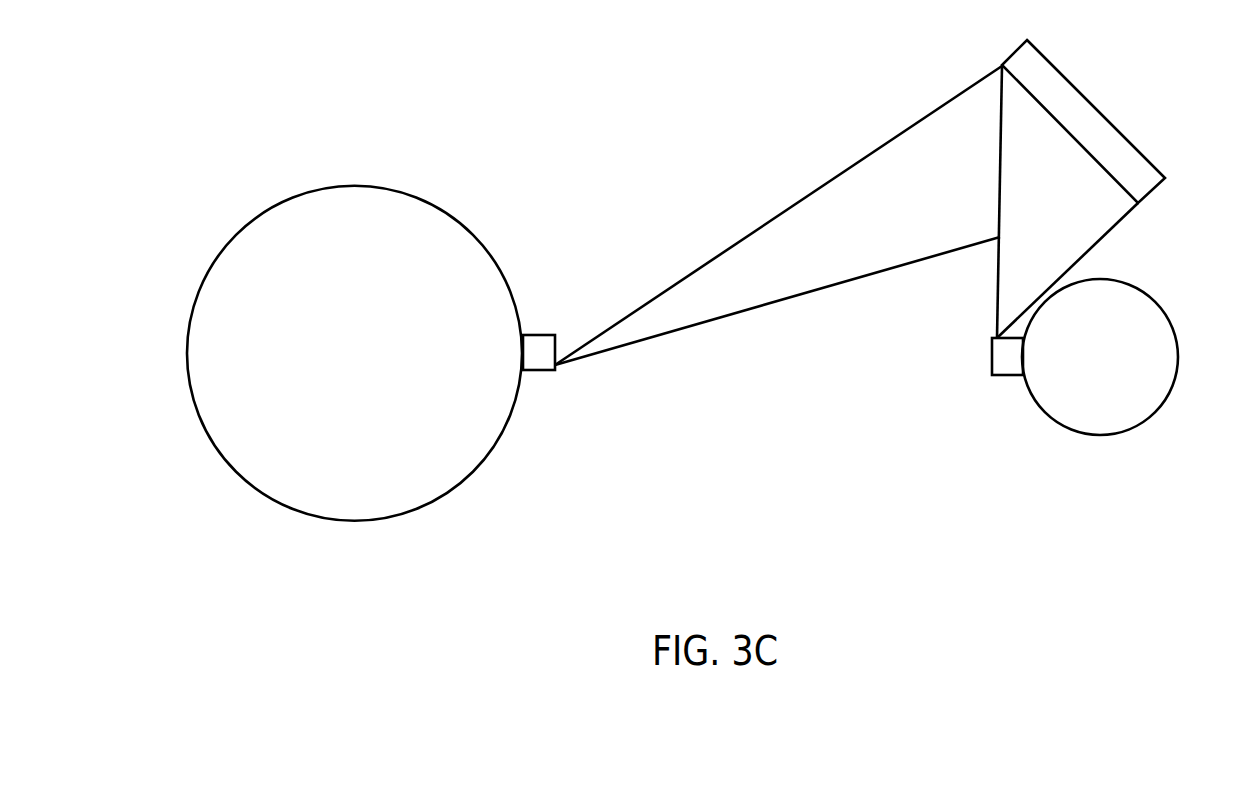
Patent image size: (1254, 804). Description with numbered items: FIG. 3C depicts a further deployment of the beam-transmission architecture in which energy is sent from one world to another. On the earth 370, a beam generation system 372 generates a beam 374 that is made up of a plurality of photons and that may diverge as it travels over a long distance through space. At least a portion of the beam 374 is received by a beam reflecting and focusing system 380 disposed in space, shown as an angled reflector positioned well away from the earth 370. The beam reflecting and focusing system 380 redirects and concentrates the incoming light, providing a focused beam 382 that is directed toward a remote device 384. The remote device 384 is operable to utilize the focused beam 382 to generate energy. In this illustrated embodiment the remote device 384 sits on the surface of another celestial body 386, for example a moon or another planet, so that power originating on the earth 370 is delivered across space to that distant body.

The earth 370 is at (405, 191).
The beam generation system 372 is at (538, 372).
The beam 374 is at (738, 315).
The beam reflecting and focusing system 380 is at (1075, 84).
The focused beam 382 is at (1112, 217).
The remote device 384 is at (1008, 377).
The celestial body 386 is at (1142, 423).